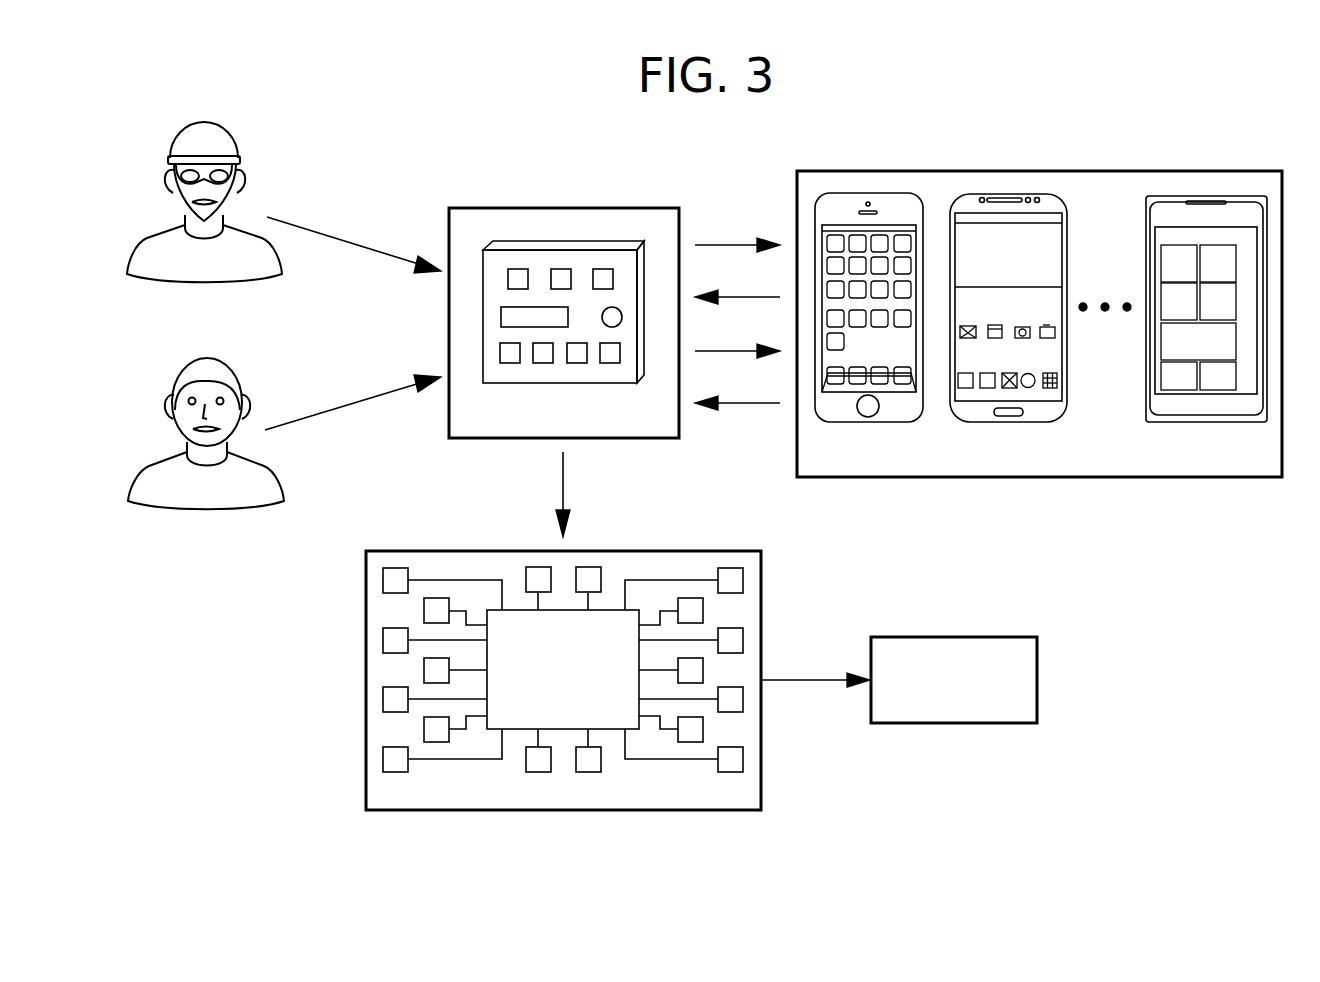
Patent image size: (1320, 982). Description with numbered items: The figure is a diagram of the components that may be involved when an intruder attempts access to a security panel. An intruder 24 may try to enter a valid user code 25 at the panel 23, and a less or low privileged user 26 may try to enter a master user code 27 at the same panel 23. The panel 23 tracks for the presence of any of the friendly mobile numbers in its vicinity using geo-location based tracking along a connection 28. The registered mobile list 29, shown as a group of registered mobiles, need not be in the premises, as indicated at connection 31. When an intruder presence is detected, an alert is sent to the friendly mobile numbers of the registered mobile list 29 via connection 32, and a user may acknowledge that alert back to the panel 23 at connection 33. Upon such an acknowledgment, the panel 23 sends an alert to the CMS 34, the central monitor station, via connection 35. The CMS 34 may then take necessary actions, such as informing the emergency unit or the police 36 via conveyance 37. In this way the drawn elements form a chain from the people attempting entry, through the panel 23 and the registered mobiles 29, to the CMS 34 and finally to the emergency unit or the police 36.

The panel 23 is at (563, 208).
The intruder 24 is at (172, 145).
The valid user code 25 is at (333, 237).
The less or low privileged user 26 is at (176, 380).
The master user code 27 is at (343, 409).
The connection 28 is at (724, 244).
The registered mobile list 29 is at (1040, 171).
The connection 31 is at (747, 296).
The connection 32 is at (724, 350).
The connection 33 is at (747, 402).
The CMS 34 is at (688, 551).
The connection 35 is at (563, 476).
The emergency unit or the police 36 is at (955, 637).
The conveyance 37 is at (808, 679).